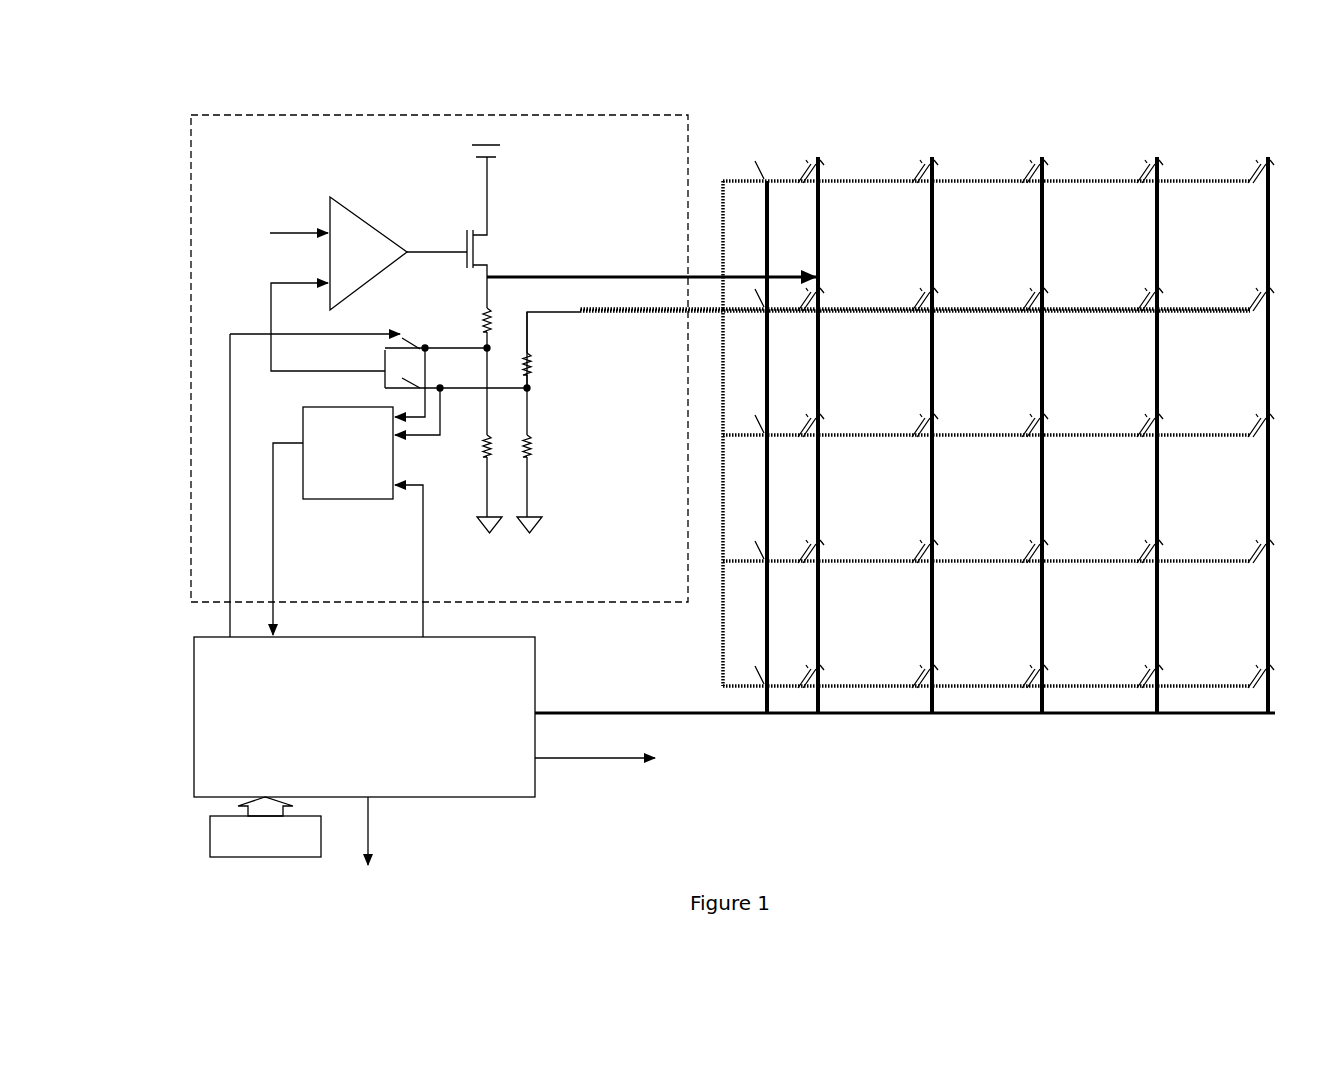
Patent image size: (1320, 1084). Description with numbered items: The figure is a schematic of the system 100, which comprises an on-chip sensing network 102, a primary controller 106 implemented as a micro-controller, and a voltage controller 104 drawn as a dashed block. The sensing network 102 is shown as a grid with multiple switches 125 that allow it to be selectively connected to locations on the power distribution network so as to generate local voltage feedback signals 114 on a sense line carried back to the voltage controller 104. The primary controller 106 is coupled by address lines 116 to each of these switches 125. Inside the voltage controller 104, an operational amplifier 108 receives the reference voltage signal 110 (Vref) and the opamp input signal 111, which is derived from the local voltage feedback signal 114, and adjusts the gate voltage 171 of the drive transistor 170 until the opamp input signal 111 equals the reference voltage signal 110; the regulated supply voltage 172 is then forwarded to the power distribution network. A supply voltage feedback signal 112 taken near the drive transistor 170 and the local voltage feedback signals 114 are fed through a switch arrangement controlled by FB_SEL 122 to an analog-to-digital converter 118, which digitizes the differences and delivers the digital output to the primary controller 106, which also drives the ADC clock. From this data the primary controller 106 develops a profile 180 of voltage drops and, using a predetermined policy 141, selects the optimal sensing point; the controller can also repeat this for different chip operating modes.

The system 100 is at (172, 95).
The sensing network 102 is at (893, 178).
The voltage controller 104 is at (440, 115).
The primary controller 106 is at (193, 717).
The operational amplifier 108 is at (372, 226).
The reference voltage signal 110 is at (250, 216).
The opamp input signal 111 is at (280, 283).
The supply voltage feedback signal 112 is at (485, 292).
The local voltage feedback signal 114 is at (595, 315).
The address lines 116 is at (866, 713).
The analog-to-digital converter 118 is at (345, 500).
The FB_SEL 122 is at (364, 473).
The switches 125 is at (920, 533).
The policy 141 is at (210, 836).
The drive transistor 170 is at (504, 228).
The gate voltage 171 is at (447, 253).
The regulated supply voltage 172 is at (640, 244).
The profile 180 is at (537, 838).